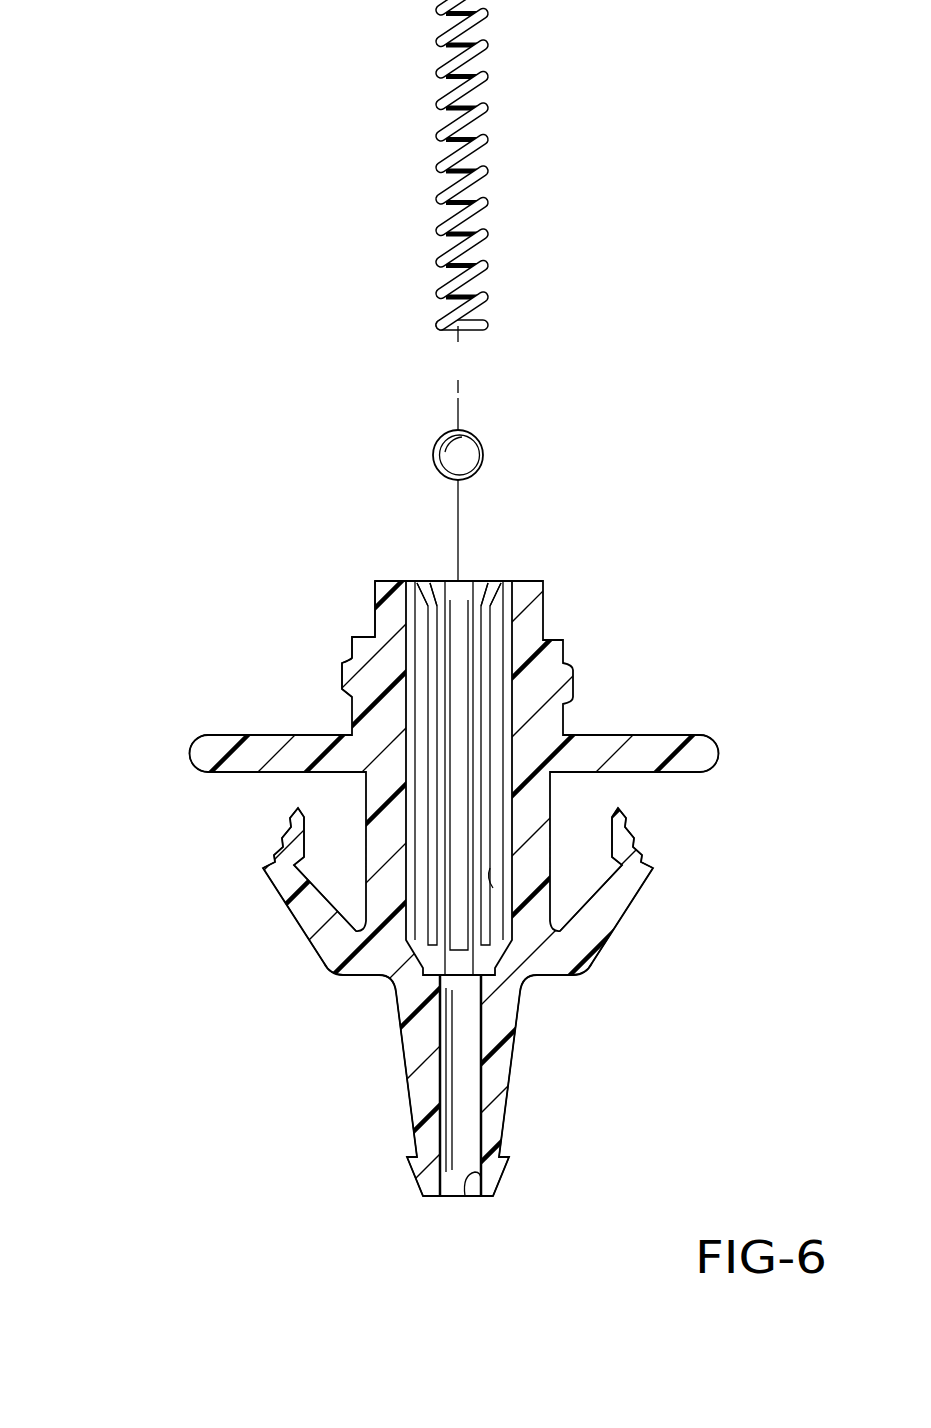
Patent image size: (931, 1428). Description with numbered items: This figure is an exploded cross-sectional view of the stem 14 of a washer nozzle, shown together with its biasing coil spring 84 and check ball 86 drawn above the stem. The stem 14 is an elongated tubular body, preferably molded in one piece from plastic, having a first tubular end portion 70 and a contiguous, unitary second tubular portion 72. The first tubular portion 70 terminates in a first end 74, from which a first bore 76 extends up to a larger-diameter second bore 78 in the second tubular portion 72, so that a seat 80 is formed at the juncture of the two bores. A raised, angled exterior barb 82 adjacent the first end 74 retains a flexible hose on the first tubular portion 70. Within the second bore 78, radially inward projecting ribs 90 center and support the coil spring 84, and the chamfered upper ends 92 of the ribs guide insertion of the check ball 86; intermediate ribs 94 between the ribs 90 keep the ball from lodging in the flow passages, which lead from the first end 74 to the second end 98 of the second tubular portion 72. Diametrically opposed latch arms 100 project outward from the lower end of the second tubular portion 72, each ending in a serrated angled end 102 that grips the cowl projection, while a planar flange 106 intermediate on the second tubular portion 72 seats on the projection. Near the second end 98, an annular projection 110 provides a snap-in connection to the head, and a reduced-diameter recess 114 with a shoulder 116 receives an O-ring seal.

The stem 14 is at (170, 639).
The first tubular end portion 70 is at (421, 1055).
The second tubular portion 72 is at (545, 818).
The first end 74 is at (432, 1200).
The first bore 76 is at (467, 1198).
The second bore 78 is at (496, 872).
The seat 80 is at (495, 955).
The exterior barb 82 is at (420, 1172).
The coil spring 84 is at (438, 168).
The check ball 86 is at (440, 436).
The ribs 90 is at (422, 618).
The upper ends of ribs 92 is at (485, 581).
The intermediate rib 94 is at (453, 581).
The second end 98 is at (525, 582).
The arms 100 is at (306, 914).
The angled end 102 is at (283, 838).
The flange 106 is at (647, 736).
The annular projection 110 is at (340, 670).
The recess 114 is at (373, 602).
The shoulder 116 is at (360, 637).